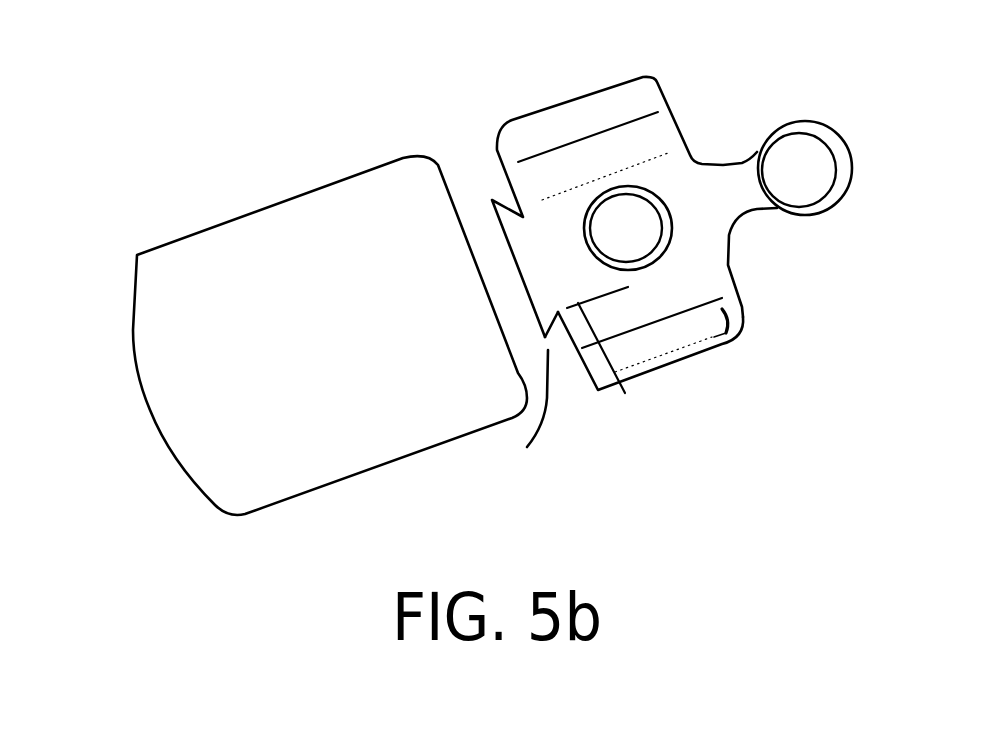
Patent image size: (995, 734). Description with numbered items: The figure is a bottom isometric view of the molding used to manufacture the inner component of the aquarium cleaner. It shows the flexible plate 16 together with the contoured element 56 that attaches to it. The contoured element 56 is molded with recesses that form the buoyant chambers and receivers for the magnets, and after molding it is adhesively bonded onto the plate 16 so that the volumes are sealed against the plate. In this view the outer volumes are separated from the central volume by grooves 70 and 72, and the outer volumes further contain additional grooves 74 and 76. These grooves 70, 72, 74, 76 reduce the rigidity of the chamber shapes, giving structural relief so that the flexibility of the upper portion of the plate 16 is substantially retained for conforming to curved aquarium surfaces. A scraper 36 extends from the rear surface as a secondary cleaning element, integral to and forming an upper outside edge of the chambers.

The flexible plate 16 is at (277, 203).
The groove 72 is at (565, 188).
The additional groove 76 is at (587, 137).
The contoured element 56 is at (722, 160).
The groove 70 is at (613, 380).
The additional groove 74 is at (683, 360).
The scraper 36 is at (530, 447).